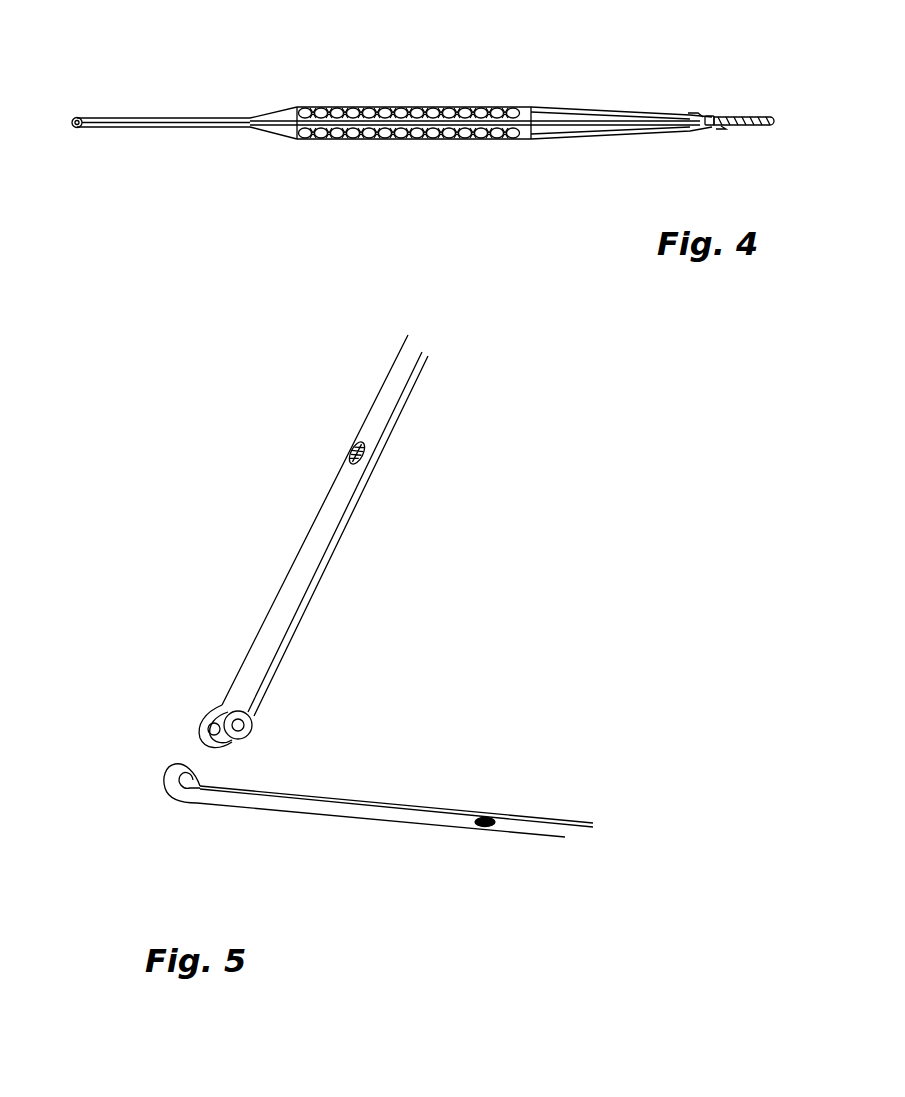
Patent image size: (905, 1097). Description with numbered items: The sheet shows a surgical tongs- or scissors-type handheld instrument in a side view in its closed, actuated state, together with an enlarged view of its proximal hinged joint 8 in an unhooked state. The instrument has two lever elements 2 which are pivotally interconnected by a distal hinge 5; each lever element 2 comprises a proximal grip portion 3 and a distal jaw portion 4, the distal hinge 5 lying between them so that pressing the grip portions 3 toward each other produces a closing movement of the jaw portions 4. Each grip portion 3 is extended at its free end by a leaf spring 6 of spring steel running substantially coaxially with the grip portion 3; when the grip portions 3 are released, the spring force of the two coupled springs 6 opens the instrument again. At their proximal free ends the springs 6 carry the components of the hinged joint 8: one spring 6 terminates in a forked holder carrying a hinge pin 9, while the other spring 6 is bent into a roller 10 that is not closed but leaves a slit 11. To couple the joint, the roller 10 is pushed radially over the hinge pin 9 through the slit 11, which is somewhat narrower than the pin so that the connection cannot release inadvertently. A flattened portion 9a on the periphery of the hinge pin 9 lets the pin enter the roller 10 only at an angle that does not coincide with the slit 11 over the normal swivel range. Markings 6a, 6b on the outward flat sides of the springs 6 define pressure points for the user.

In FIG. 4, the lever element 2 is at (360, 83).
In FIG. 4, the grip portion 3 is at (448, 107).
In FIG. 4, the jaw portion 4 is at (752, 115).
In FIG. 4, the distal hinge 5 is at (702, 113).
In FIG. 4, the spring 6 is at (166, 117).
In FIG. 5, the spring 6 is at (358, 487).
In FIG. 5, the marking 6a is at (487, 830).
In FIG. 5, the marking 6b is at (350, 445).
In FIG. 4, the hinged joint 8 is at (74, 104).
In FIG. 5, the hinged joint 8 is at (152, 724).
In FIG. 5, the hinge pin 9 is at (240, 718).
In FIG. 5, the flattened portion 9a is at (213, 710).
In FIG. 5, the roller 10 is at (165, 785).
In FIG. 5, the slit 11 is at (193, 780).